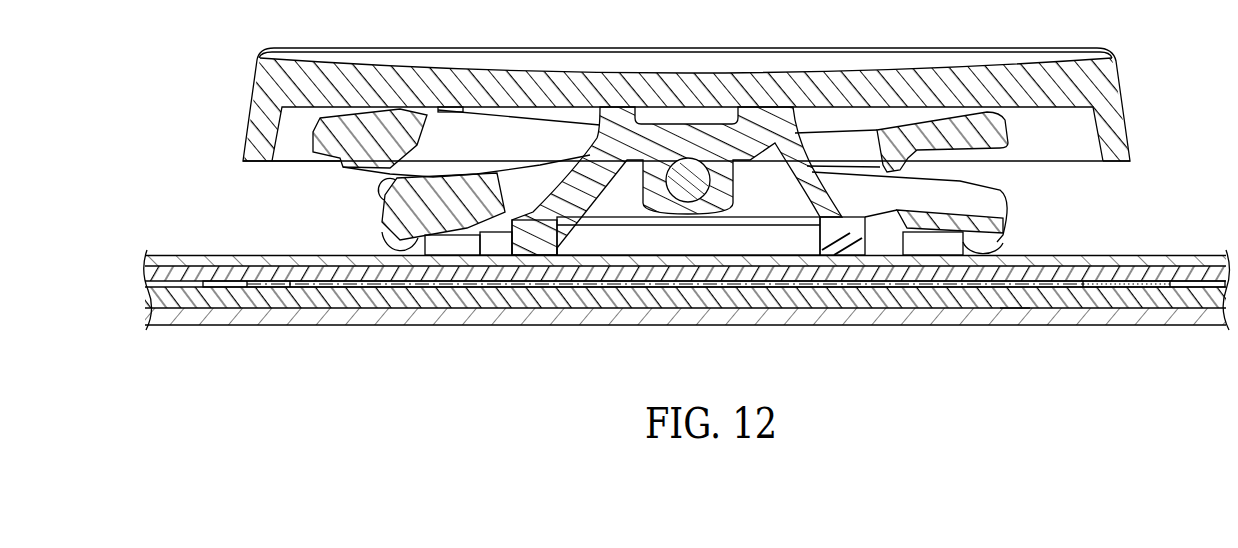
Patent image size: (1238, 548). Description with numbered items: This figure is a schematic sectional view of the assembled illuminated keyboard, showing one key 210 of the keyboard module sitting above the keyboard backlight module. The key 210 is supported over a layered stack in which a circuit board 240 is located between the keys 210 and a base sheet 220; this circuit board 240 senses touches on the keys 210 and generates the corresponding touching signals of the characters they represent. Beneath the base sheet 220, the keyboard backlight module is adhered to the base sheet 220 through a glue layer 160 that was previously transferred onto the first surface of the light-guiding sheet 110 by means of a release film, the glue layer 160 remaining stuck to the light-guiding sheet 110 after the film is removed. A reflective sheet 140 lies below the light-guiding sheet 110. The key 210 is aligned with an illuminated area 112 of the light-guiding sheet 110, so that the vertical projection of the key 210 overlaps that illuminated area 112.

The light-guiding sheet 110 is at (687, 317).
The illuminated areas 112 is at (1015, 314).
The reflective sheet 140 is at (896, 316).
The glue layer 160 is at (212, 293).
The key 210 is at (1114, 130).
The base sheet 220 is at (1205, 279).
The circuit board 240 is at (1068, 258).